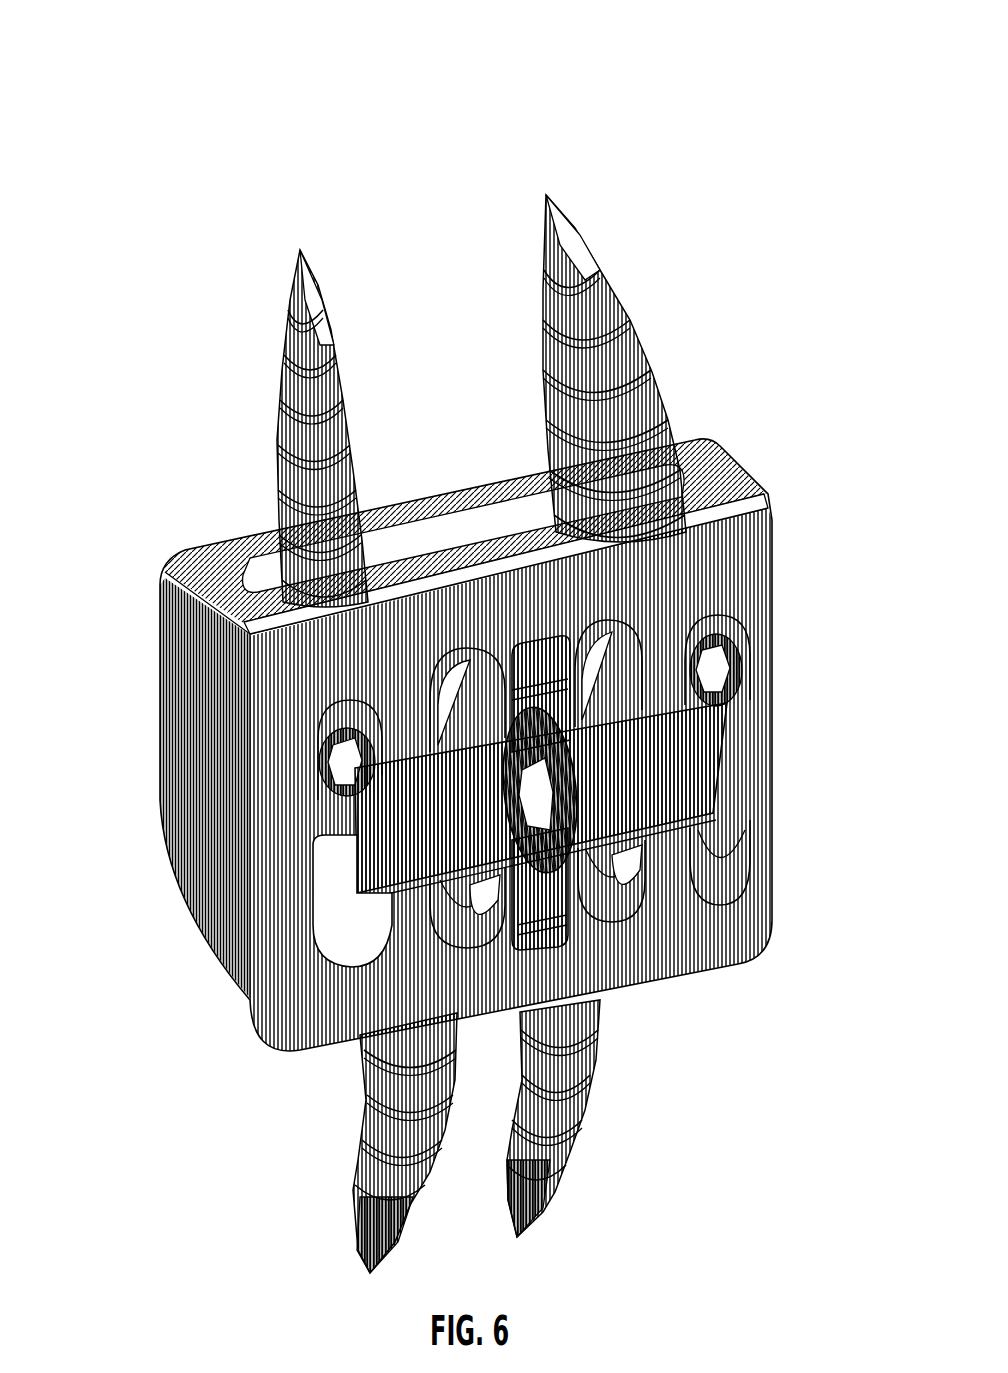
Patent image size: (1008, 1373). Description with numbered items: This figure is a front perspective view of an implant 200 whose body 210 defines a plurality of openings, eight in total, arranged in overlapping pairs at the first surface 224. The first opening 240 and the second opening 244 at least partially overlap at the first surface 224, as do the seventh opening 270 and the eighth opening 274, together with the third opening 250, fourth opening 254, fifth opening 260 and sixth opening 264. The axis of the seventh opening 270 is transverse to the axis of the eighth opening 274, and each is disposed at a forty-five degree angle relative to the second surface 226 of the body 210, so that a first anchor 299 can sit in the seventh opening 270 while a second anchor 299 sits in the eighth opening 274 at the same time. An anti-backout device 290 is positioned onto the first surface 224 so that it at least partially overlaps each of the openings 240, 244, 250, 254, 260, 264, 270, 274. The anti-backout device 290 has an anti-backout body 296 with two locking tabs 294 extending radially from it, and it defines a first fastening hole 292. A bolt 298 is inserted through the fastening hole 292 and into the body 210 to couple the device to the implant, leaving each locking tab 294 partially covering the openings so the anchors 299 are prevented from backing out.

The implant 200 is at (132, 264).
The body 210 is at (207, 707).
The first surface 224 is at (207, 563).
The second surface 226 is at (187, 900).
The first opening 240 is at (498, 650).
The second opening 244 is at (467, 920).
The third opening 250 is at (623, 627).
The fourth opening 254 is at (607, 887).
The fifth opening 260 is at (350, 717).
The sixth opening 264 is at (345, 915).
The seventh opening 270 is at (723, 622).
The eighth opening 274 is at (712, 945).
The anti-backout device 290 is at (693, 767).
The first fastening hole 292 is at (556, 655).
The locking tabs 294 is at (700, 718).
The anti-backout body 296 is at (540, 838).
The bolt 298 is at (515, 935).
The anchor 299 is at (598, 268).